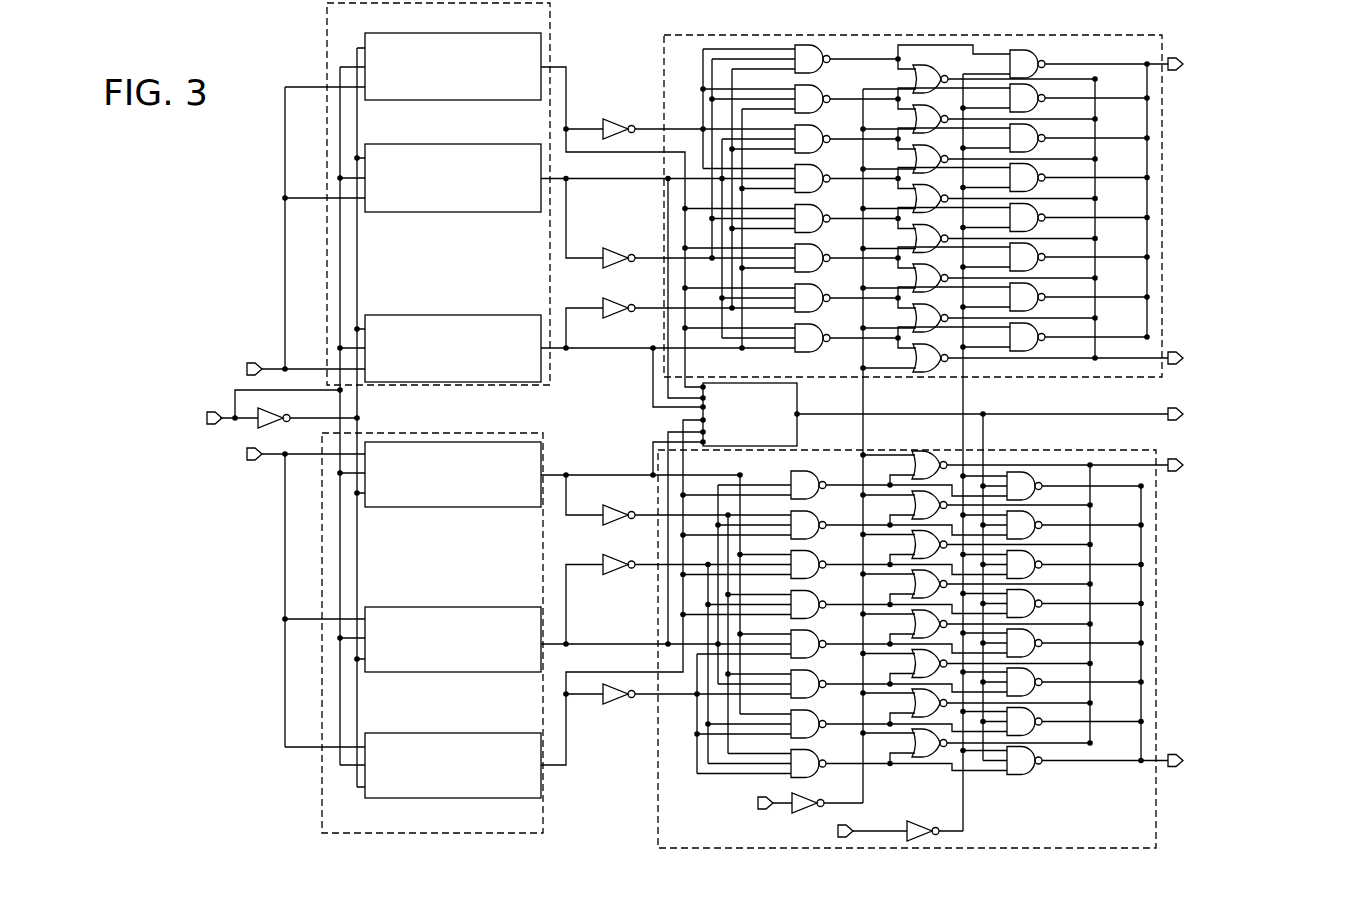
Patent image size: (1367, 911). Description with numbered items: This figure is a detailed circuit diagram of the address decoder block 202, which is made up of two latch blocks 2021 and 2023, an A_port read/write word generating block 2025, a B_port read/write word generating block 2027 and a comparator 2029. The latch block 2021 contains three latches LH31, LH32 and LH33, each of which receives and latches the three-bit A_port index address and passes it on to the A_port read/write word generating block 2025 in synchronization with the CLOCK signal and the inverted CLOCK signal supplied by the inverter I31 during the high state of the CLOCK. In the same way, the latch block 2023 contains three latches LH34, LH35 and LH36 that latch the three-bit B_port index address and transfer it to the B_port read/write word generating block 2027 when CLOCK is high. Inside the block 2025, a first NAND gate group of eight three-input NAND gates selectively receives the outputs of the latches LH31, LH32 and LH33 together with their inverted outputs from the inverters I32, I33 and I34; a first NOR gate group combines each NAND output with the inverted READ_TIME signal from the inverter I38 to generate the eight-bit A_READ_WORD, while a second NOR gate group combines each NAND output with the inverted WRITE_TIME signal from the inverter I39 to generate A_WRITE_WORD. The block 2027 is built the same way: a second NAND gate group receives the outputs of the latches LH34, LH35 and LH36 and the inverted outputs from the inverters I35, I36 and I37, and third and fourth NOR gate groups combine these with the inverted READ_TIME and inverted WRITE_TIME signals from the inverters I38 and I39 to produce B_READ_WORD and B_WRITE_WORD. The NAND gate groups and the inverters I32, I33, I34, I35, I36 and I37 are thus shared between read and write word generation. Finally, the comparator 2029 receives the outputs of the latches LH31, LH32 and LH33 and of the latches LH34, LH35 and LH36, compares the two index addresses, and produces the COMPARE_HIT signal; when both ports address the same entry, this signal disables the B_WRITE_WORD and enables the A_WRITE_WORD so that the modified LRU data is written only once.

The address decoder block 202 is at (1268, 33).
The latch block 2021 is at (552, 35).
The latch block 2023 is at (546, 446).
The A_port read/write word generating block 2025 is at (1165, 147).
The B_port read/write word generating block 2027 is at (1160, 561).
The comparator 2029 is at (797, 418).
The latch LH31 is at (455, 26).
The latch LH32 is at (452, 138).
The latch LH33 is at (452, 308).
The latch LH34 is at (447, 507).
The latch LH35 is at (447, 672).
The latch LH36 is at (447, 798).
The inverter I31 is at (296, 410).
The inverter I32 is at (623, 117).
The inverter I33 is at (623, 247).
The inverter I34 is at (623, 297).
The inverter I35 is at (623, 527).
The inverter I36 is at (623, 577).
The inverter I37 is at (623, 705).
The inverter I38 is at (822, 800).
The inverter I39 is at (928, 827).